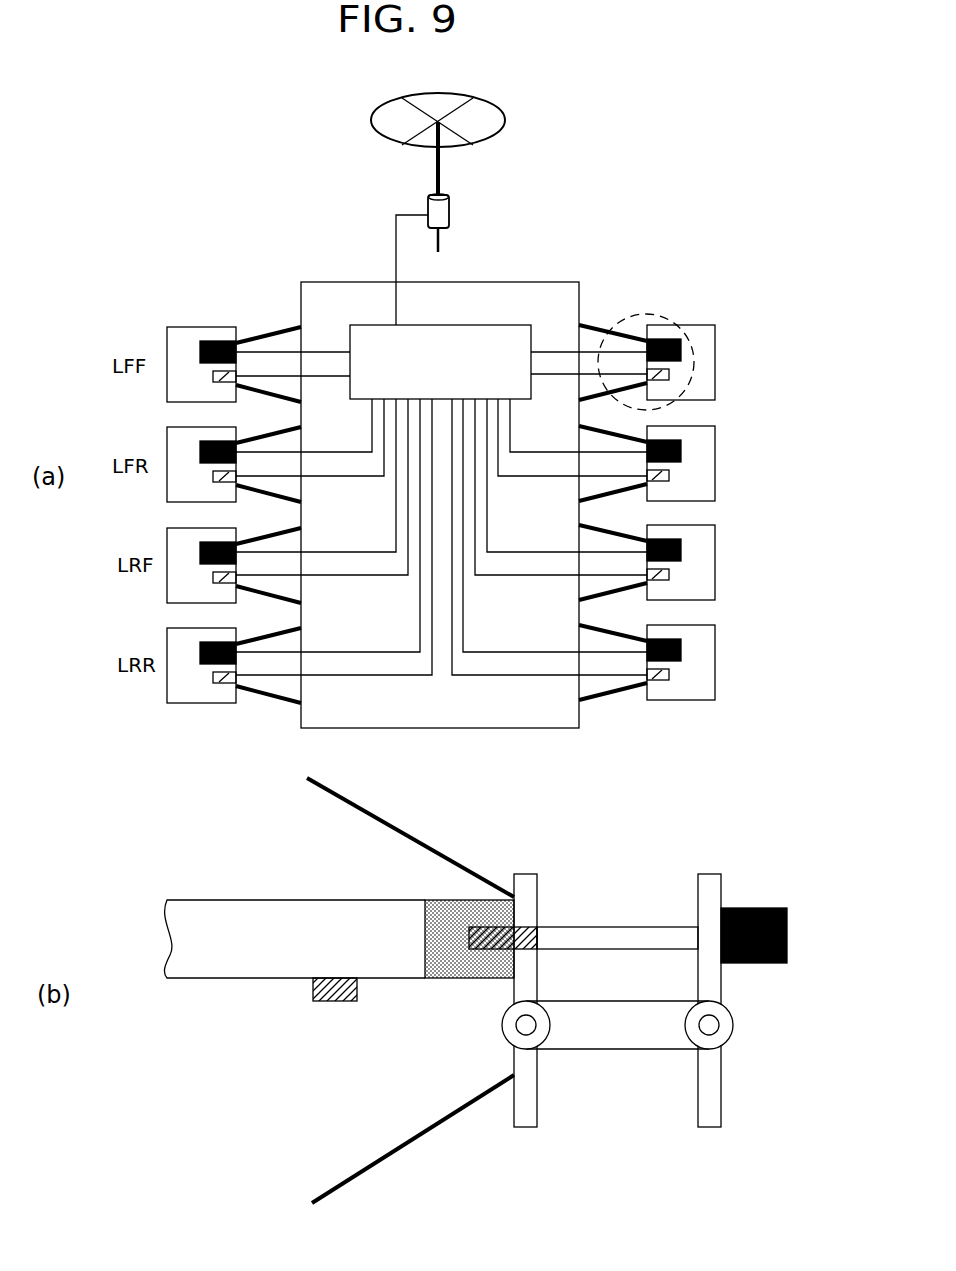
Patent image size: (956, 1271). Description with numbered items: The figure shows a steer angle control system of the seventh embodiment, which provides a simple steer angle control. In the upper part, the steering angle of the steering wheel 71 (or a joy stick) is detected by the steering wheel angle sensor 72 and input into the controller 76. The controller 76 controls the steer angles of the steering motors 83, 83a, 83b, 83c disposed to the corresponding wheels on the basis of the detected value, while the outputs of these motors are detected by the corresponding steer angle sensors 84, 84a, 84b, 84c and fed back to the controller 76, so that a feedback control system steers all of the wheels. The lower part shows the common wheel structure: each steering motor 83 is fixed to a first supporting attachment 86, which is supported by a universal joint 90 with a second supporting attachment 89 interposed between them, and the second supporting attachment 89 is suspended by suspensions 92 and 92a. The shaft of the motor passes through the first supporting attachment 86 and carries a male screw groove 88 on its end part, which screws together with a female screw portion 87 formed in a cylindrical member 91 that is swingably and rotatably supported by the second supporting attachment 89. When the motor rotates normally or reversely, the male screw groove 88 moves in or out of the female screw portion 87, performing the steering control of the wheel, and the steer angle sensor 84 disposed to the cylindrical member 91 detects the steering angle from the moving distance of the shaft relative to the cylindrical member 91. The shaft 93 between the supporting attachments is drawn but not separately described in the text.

The steering wheel 71 is at (505, 118).
The steering wheel angle sensor 72 is at (449, 212).
The controller 76 is at (493, 325).
The steering motor 83 is at (550, 688).
The steer angle sensor 84 is at (670, 375).
The steering motor 83a is at (678, 461).
The steer angle sensor 84a is at (670, 476).
The steering motor 83b is at (678, 561).
The steer angle sensor 84b is at (670, 575).
The steering motor 83c is at (678, 661).
The steer angle sensor 84c is at (670, 675).
The first supporting attachment 86 is at (708, 872).
The female screw portion 87 is at (433, 980).
The male screw groove 88 is at (487, 953).
The second supporting attachment 89 is at (522, 872).
The universal joint 90 is at (616, 1052).
The cylindrical member 91 is at (208, 898).
The suspension 92 is at (355, 803).
The suspension 92a is at (357, 1178).
The shaft 93 is at (610, 925).